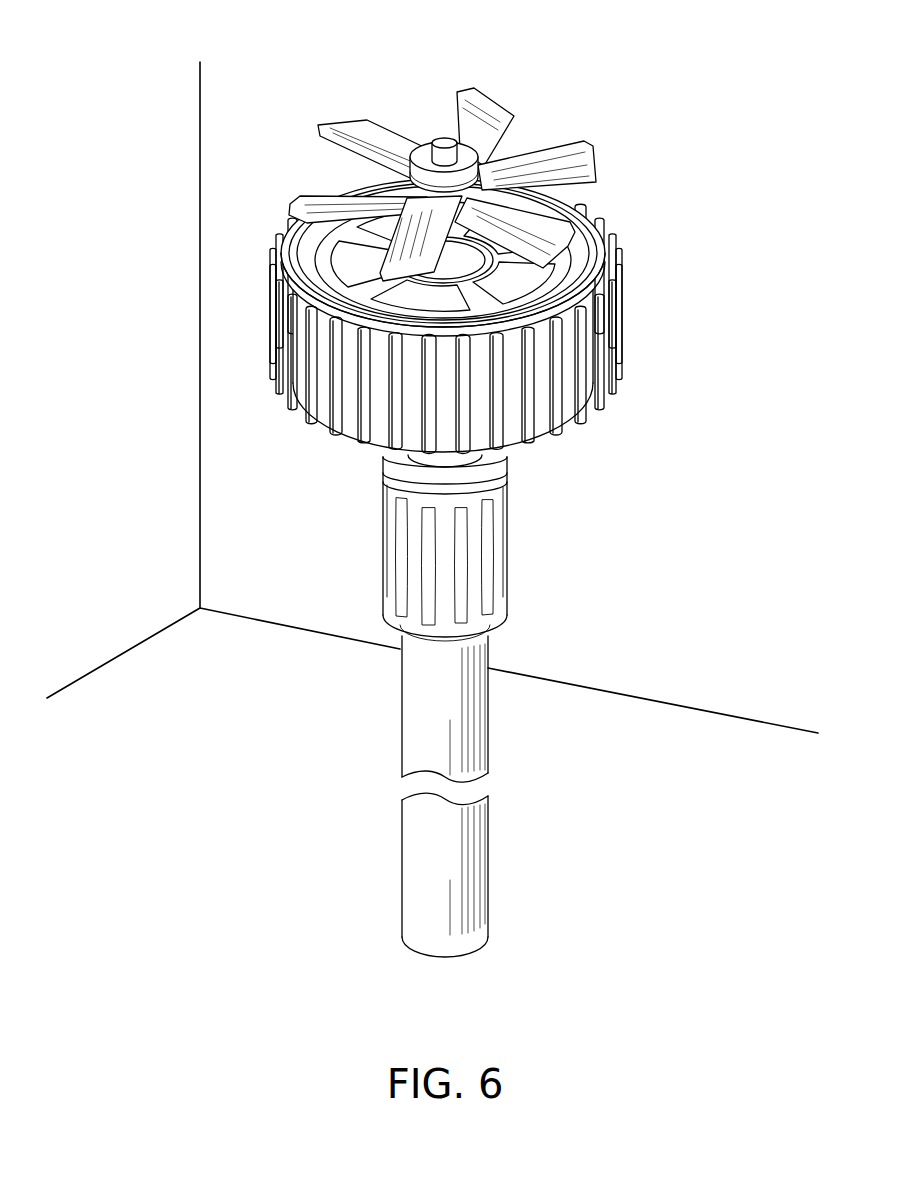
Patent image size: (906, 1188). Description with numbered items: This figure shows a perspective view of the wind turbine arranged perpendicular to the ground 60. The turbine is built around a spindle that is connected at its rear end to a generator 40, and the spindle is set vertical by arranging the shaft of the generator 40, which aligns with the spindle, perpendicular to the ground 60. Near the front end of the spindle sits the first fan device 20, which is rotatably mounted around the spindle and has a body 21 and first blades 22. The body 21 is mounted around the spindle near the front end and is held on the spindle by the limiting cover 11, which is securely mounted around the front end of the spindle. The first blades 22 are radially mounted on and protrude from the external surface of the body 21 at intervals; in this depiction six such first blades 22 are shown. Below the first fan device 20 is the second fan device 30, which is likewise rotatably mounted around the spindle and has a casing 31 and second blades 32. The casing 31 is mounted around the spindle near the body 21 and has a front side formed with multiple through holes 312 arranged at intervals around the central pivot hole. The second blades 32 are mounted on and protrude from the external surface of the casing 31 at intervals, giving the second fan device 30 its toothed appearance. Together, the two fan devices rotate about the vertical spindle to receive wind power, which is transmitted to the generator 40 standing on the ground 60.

The limiting cover 11 is at (446, 140).
The first fan device 20 is at (468, 167).
The body 21 is at (466, 153).
The first blades 22 is at (582, 174).
The second fan device 30 is at (457, 340).
The casing 31 is at (547, 428).
The second blades 32 is at (360, 418).
The through holes 312 is at (330, 258).
The generator 40 is at (520, 584).
The ground 60 is at (716, 728).